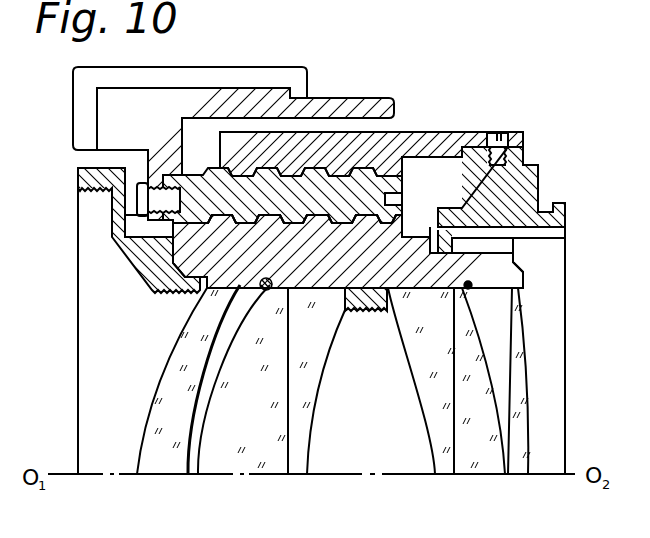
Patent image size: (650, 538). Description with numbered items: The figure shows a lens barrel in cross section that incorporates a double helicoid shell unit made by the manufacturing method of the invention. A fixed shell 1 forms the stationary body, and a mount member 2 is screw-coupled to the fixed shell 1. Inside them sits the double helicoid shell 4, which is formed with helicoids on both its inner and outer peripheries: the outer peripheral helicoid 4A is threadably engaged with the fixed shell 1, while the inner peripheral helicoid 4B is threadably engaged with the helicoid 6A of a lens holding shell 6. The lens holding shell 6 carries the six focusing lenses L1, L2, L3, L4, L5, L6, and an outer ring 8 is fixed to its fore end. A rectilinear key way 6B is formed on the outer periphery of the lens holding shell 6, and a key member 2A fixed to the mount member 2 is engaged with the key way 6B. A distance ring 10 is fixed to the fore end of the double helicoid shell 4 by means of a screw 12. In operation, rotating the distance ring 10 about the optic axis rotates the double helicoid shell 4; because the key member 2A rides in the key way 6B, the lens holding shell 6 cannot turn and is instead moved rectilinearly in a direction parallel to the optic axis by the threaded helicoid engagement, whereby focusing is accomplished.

The fixed shell 1 is at (467, 138).
The mount member 2 is at (537, 178).
The key member 2A is at (440, 245).
The double helicoid shell 4 is at (358, 182).
The outer peripheral helicoid 4A is at (410, 131).
The inner peripheral helicoid 4B is at (334, 222).
The lens holding shell 6 is at (357, 312).
The helicoid 6A is at (350, 217).
The rectilinear key way 6B is at (503, 253).
The outer ring 8 is at (78, 178).
The distance ring 10 is at (222, 92).
The screw 12 is at (142, 212).
The focusing lens L1 is at (170, 460).
The focusing lens L2 is at (233, 460).
The focusing lens L3 is at (295, 460).
The focusing lens L4 is at (450, 460).
The focusing lens L5 is at (488, 460).
The focusing lens L6 is at (527, 460).